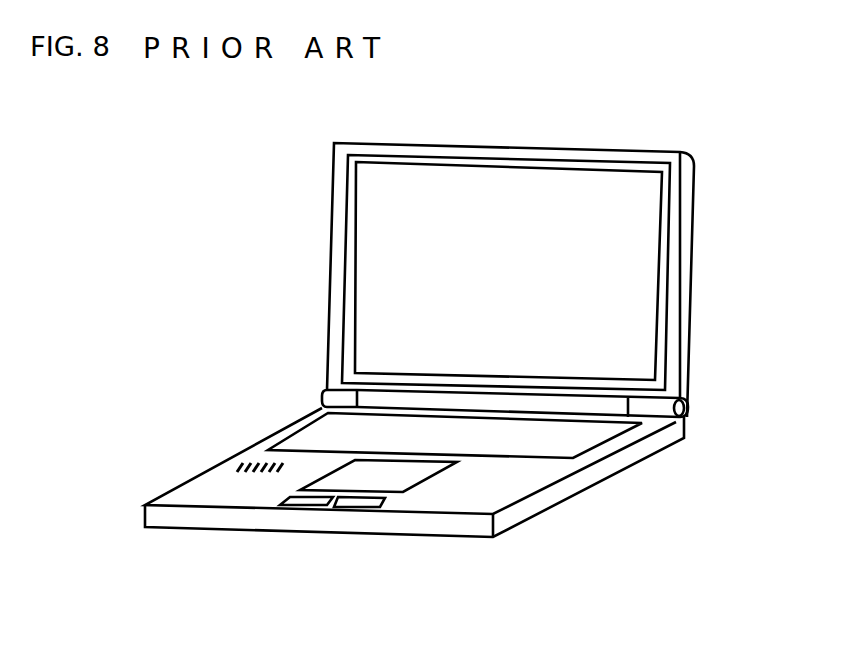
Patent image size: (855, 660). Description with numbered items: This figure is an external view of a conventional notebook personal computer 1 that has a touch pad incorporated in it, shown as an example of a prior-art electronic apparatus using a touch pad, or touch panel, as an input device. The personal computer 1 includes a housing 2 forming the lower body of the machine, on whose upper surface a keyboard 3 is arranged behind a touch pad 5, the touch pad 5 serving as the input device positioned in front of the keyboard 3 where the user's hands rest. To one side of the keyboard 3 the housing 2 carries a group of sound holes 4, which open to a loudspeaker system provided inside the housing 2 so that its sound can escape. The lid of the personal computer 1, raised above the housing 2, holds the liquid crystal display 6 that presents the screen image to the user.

The personal computer 1 is at (330, 150).
The housing 2 is at (222, 495).
The keyboard 3 is at (580, 440).
The sound holes 4 is at (240, 465).
The touch pad 5 is at (390, 482).
The liquid crystal display 6 is at (652, 225).